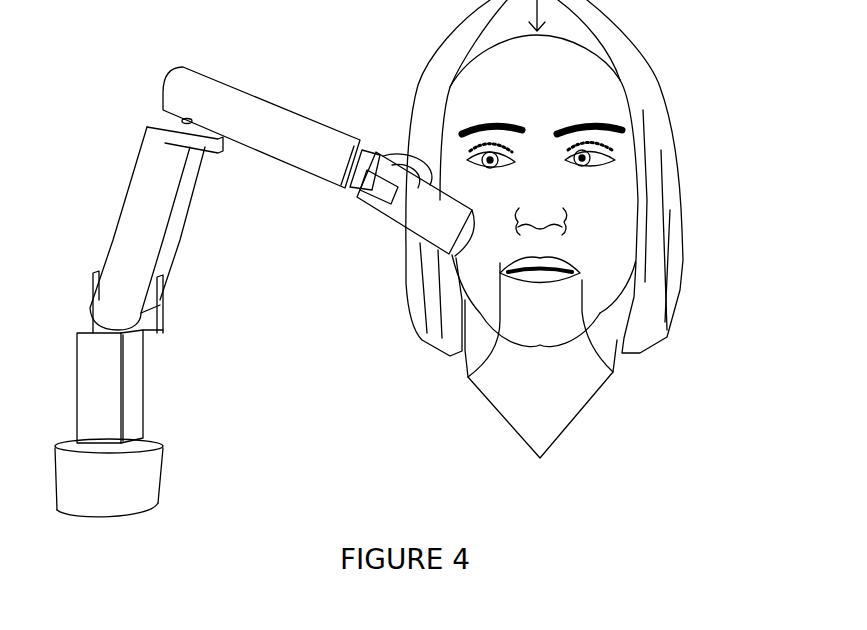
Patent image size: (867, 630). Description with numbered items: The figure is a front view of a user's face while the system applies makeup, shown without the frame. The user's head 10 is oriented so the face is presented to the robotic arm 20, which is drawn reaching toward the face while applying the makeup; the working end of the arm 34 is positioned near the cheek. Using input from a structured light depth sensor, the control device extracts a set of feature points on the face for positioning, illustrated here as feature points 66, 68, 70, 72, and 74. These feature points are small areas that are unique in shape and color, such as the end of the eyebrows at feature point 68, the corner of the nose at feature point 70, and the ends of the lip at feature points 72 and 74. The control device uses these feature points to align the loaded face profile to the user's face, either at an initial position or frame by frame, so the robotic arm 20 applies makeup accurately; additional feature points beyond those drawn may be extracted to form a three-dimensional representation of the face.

The user's head 10 is at (418, 83).
The robotic arm 20 is at (117, 223).
The end effector / treatment head 34 is at (468, 235).
The feature point 66 is at (527, 120).
The feature point 68 is at (623, 128).
The feature point 70 is at (572, 232).
The feature point 72 is at (617, 358).
The feature point 74 is at (468, 375).